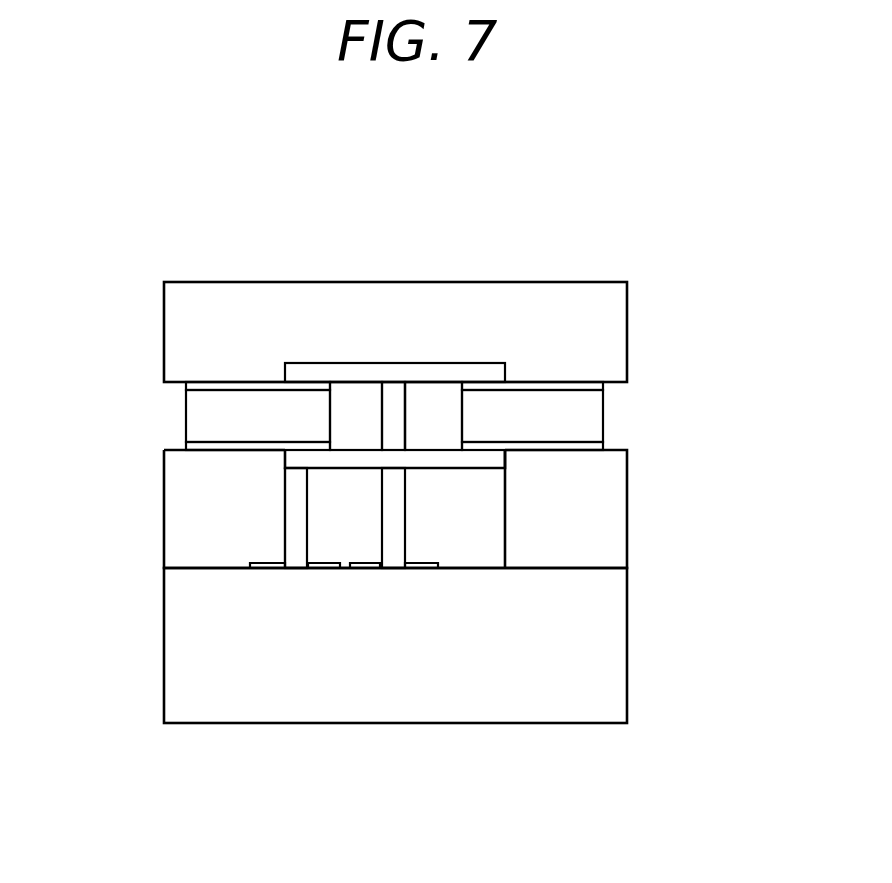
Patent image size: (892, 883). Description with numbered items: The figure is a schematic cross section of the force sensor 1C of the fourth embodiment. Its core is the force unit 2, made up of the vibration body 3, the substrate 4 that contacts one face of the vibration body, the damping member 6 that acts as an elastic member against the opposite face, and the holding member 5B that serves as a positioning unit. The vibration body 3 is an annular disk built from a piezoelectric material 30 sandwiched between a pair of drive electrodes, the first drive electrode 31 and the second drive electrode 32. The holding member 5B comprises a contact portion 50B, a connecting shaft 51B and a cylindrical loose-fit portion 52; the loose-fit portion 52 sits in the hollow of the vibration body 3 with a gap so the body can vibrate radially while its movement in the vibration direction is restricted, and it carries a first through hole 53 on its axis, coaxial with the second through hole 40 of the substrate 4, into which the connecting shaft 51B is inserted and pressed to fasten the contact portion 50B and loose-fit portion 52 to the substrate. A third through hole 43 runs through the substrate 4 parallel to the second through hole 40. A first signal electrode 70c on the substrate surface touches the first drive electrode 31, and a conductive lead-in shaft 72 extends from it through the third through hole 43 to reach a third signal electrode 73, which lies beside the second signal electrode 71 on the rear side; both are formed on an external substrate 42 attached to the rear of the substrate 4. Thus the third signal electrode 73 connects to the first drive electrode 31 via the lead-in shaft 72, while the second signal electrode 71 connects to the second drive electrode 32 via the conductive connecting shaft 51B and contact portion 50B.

The force sensor 1C is at (682, 286).
The force unit 2 is at (132, 335).
The vibration body 3 is at (63, 365).
The substrate 4 is at (620, 548).
The holding member 5B is at (493, 218).
The damping member 6 is at (620, 337).
The piezoelectric material 30 is at (193, 414).
The first drive electrode 31 is at (203, 447).
The second drive electrode 32 is at (198, 389).
The second through hole 40 is at (405, 490).
The external substrate 42 is at (620, 655).
The third through hole 43 is at (285, 559).
The contact portion 50B is at (437, 372).
The connecting shaft 51B is at (396, 395).
The loose-fit portion 52 is at (352, 397).
The first through hole 53 is at (405, 413).
The first signal electrode 70c is at (295, 458).
The second signal electrode 71 is at (372, 566).
The lead-in shaft 72 is at (296, 500).
The third signal electrode 73 is at (265, 570).